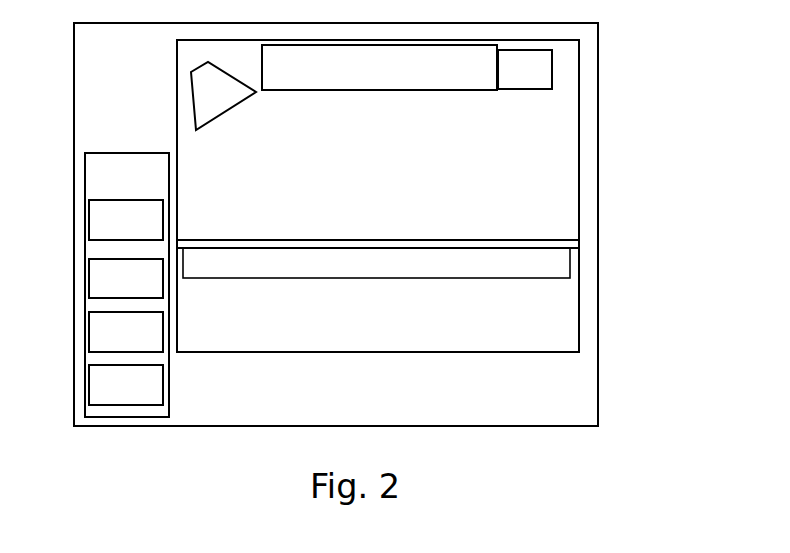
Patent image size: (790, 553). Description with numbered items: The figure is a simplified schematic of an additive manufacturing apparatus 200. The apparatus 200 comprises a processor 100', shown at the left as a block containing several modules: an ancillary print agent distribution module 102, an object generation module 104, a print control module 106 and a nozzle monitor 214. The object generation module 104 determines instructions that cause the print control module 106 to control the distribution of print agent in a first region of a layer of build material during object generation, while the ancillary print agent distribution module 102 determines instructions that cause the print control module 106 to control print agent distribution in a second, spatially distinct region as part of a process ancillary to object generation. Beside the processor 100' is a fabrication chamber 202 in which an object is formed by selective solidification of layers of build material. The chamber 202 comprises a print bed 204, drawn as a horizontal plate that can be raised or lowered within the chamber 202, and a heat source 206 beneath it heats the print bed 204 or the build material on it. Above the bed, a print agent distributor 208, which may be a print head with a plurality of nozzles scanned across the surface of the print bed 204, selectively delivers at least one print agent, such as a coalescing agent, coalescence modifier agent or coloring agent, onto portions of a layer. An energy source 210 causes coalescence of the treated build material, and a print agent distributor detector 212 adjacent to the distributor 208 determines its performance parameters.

The additive manufacturing apparatus 200 is at (598, 60).
The fabrication chamber 202 is at (570, 337).
The print bed 204 is at (262, 238).
The heat source 206 is at (389, 272).
The print agent distributor 208 is at (399, 75).
The energy source 210 is at (230, 107).
The print agent distributor detector 212 is at (543, 81).
The processor 100' is at (127, 285).
The ancillary print agent distribution module 102 is at (143, 232).
The object generation module 104 is at (143, 290).
The print control module 106 is at (143, 343).
The nozzle monitor 214 is at (143, 397).